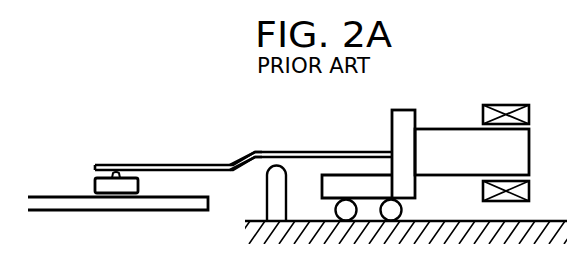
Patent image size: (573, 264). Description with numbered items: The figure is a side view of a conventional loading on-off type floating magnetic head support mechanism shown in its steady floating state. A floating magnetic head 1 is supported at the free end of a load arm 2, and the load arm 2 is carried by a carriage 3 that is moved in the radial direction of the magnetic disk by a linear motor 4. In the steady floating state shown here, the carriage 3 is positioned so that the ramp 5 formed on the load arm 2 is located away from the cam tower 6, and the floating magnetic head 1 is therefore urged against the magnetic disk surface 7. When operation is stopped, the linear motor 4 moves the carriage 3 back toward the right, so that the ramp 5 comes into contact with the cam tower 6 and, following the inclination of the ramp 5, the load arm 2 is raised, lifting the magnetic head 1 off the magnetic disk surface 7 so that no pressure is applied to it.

The floating magnetic head 1 is at (95, 184).
The load arm 2 is at (168, 163).
The carriage 3 is at (403, 117).
The linear motor 4 is at (525, 152).
The ramp 5 is at (242, 154).
The cam tower 6 is at (267, 189).
The magnetic disk surface 7 is at (118, 210).